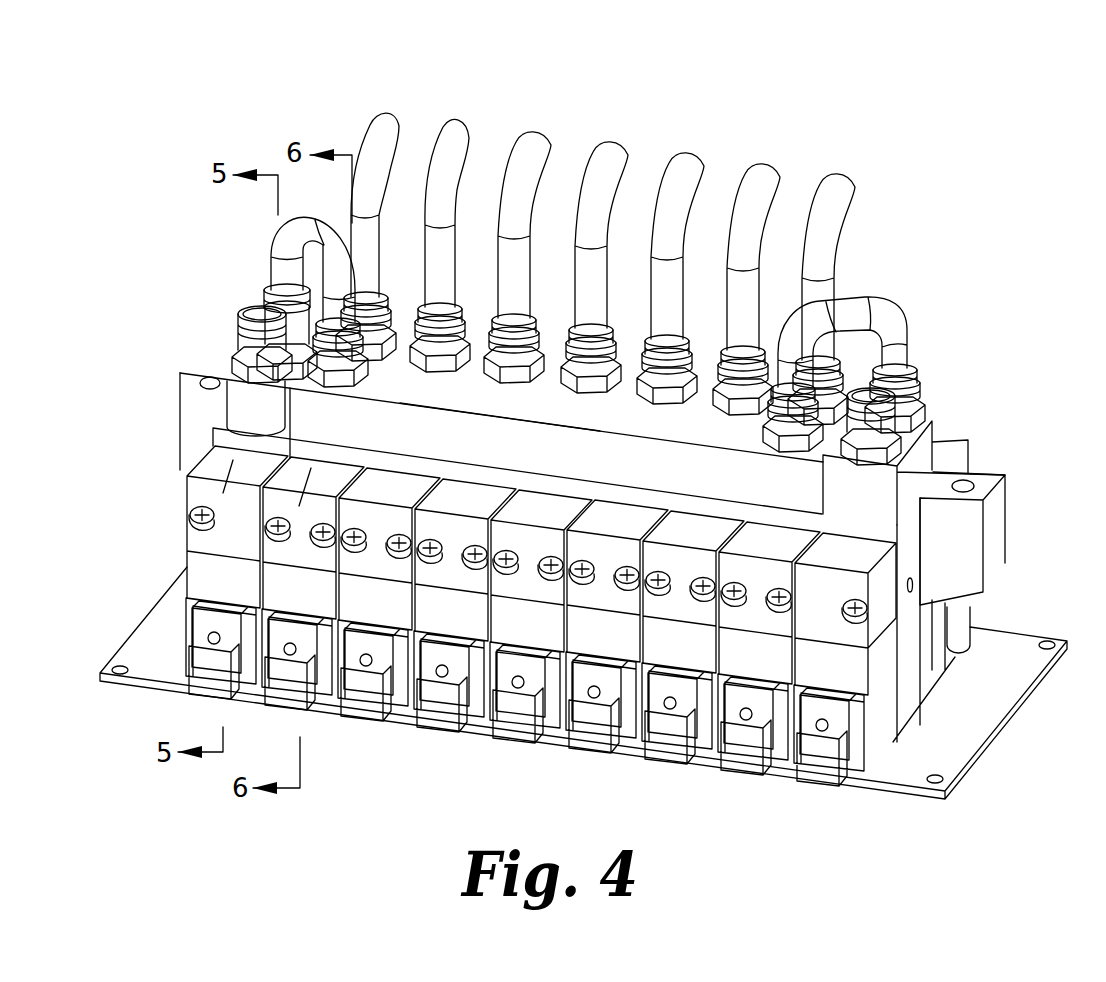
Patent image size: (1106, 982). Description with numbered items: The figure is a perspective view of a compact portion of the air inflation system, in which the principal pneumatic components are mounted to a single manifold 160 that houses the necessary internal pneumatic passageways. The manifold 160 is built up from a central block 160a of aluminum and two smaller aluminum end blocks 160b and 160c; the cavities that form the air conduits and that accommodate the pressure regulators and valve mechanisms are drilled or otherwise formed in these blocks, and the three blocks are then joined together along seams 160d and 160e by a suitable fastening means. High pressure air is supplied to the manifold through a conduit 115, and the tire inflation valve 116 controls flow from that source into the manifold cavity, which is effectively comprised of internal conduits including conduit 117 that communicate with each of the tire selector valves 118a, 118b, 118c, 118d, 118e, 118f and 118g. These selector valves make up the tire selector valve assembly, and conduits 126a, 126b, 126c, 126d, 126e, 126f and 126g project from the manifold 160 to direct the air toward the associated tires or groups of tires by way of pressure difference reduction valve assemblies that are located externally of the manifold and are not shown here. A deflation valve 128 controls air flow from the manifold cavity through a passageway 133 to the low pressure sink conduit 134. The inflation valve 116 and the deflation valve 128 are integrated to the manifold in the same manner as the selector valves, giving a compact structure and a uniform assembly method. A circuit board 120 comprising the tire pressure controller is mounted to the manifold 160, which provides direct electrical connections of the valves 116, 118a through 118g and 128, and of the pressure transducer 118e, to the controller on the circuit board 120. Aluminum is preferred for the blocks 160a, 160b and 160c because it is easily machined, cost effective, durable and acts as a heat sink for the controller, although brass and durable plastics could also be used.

The conduit 115 is at (257, 314).
The tire inflation valve 116 is at (207, 470).
The conduit 117 is at (280, 237).
The tire selector valve 118a is at (285, 457).
The tire selector valve 118b is at (402, 487).
The tire selector valve 118c is at (478, 497).
The tire selector valve 118d is at (557, 507).
The tire selector valve 118e is at (634, 516).
The tire selector valve 118f is at (710, 527).
The tire selector valve 118g is at (783, 540).
The circuit board 120 is at (925, 738).
The conduit 126a is at (383, 126).
The conduit 126b is at (458, 130).
The conduit 126c is at (533, 140).
The conduit 126d is at (612, 152).
The conduit 126e is at (688, 160).
The conduit 126f is at (765, 170).
The conduit 126g is at (843, 182).
The deflation valve 128 is at (880, 547).
The passageway 133 is at (893, 320).
The low pressure sink conduit 134 is at (873, 393).
The manifold 160 is at (713, 470).
The central block 160a is at (478, 425).
The end block 160b is at (250, 412).
The end block 160c is at (947, 530).
The seam 160d is at (265, 398).
The seam 160e is at (933, 453).